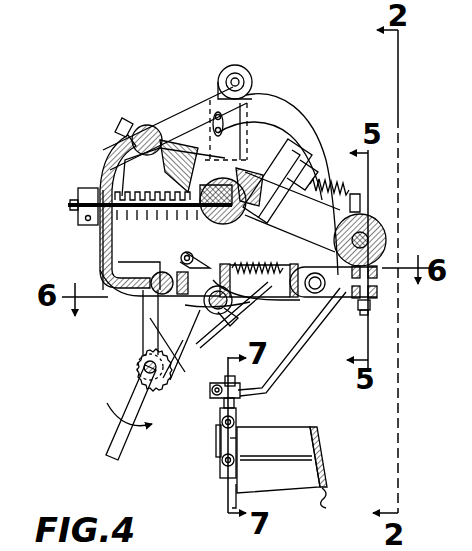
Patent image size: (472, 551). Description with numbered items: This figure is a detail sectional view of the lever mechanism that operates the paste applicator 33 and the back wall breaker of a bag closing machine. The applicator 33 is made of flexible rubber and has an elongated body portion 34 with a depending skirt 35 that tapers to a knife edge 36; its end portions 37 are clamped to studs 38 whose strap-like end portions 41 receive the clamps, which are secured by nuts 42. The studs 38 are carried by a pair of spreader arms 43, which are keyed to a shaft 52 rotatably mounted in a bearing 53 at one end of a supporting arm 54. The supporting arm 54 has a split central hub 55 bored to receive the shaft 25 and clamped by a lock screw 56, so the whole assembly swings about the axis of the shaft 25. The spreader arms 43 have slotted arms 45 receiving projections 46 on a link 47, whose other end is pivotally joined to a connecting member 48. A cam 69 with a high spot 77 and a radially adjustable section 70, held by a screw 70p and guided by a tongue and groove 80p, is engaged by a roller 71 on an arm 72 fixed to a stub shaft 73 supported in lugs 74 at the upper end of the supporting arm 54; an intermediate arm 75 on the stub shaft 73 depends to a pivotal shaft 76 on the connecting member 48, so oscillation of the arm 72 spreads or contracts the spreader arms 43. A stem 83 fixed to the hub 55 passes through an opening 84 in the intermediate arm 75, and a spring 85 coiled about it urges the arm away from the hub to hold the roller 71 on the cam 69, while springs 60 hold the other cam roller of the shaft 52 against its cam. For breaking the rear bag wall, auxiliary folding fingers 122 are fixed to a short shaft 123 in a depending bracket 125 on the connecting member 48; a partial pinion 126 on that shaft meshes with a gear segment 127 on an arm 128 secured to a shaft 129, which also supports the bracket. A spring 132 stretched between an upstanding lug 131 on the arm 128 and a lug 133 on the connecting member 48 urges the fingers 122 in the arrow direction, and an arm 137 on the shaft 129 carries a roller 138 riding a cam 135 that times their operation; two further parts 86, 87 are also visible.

The shaft 25 is at (236, 180).
The paste applicator 33 is at (302, 426).
The elongated body portion 34 is at (323, 440).
The depending skirt 35 is at (324, 466).
The knife edge 36 is at (337, 500).
The end portions 37 is at (217, 446).
The studs 38 is at (238, 400).
The strap-like end portions 41 is at (232, 439).
The nuts 42 is at (235, 422).
The spreader arms 43 is at (289, 362).
The arms 45 is at (380, 286).
The projections 46 is at (380, 260).
The link 47 is at (372, 296).
The connecting member 48 is at (280, 294).
The shaft 52 is at (382, 240).
The bearing 53 is at (376, 230).
The supporting arm 54 is at (312, 162).
The central hub 55 is at (284, 120).
The lock screw 56 is at (300, 145).
The springs 60 is at (340, 192).
The cam 69 is at (280, 115).
The adjustable section 70 is at (233, 66).
The screw 70p is at (215, 106).
The roller 71 is at (236, 65).
The arm 72 is at (209, 80).
The stub shaft 73 is at (146, 128).
The lugs 74 is at (170, 140).
The intermediate arm 75 is at (107, 110).
The shaft 76 is at (153, 290).
The high spot 77 is at (250, 100).
The tongue and groove 80p is at (252, 110).
The stem 83 is at (68, 207).
The opening 84 is at (106, 222).
The spring 85 is at (160, 222).
The bracket 86 is at (118, 262).
The stop 87 is at (78, 194).
The auxiliary folding fingers 122 is at (110, 449).
The short shaft 123 is at (143, 369).
The depending bracket 125 is at (146, 318).
The partial pinion 126 is at (137, 362).
The gear segment 127 is at (178, 376).
The arm 128 is at (200, 337).
The shaft 129 is at (230, 314).
The upstanding lug 131 is at (258, 292).
The spring 132 is at (268, 266).
The lug 133 is at (296, 266).
The cam 135 is at (278, 122).
The arm 137 is at (216, 252).
The roller 138 is at (187, 252).